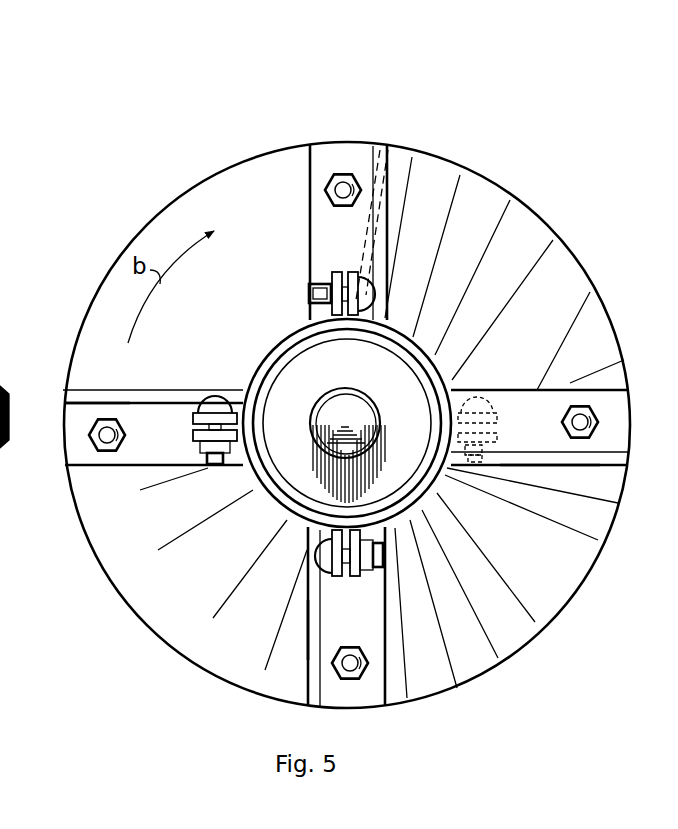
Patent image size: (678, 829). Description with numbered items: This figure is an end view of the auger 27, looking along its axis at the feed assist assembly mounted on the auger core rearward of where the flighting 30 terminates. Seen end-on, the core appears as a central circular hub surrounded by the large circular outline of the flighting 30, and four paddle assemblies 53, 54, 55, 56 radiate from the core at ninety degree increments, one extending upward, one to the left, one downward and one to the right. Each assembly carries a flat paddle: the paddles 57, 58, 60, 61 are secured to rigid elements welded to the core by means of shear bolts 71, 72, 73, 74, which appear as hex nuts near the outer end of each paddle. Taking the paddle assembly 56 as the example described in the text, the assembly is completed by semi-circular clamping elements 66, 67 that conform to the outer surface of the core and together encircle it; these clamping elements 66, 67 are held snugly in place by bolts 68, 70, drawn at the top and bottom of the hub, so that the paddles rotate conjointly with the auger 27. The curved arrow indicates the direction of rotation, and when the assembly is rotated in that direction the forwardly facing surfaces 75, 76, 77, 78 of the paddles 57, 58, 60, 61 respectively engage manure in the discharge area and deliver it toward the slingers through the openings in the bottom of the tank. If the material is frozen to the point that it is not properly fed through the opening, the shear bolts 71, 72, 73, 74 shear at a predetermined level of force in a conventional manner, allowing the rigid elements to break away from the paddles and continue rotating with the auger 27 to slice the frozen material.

The auger 27 is at (221, 154).
The flighting 30 is at (480, 185).
The paddle assembly 53 is at (323, 132).
The paddle assembly 54 is at (80, 469).
The paddle assembly 55 is at (297, 684).
The paddle assembly 56 is at (609, 387).
The paddle 57 is at (380, 238).
The paddle 58 is at (105, 398).
The paddle 60 is at (313, 605).
The paddle 61 is at (565, 458).
The semi-circular clamping element 66 is at (433, 332).
The semi-circular clamping element 67 is at (278, 348).
The bolt 68 is at (373, 290).
The bolt 70 is at (327, 553).
The shear bolt 71 is at (343, 172).
The shear bolt 72 is at (98, 425).
The shear bolt 73 is at (367, 672).
The shear bolt 74 is at (580, 404).
The forwardly facing surface 75 is at (400, 160).
The forwardly facing surface 76 is at (167, 390).
The forwardly facing surface 77 is at (305, 633).
The forwardly facing surface 78 is at (540, 468).